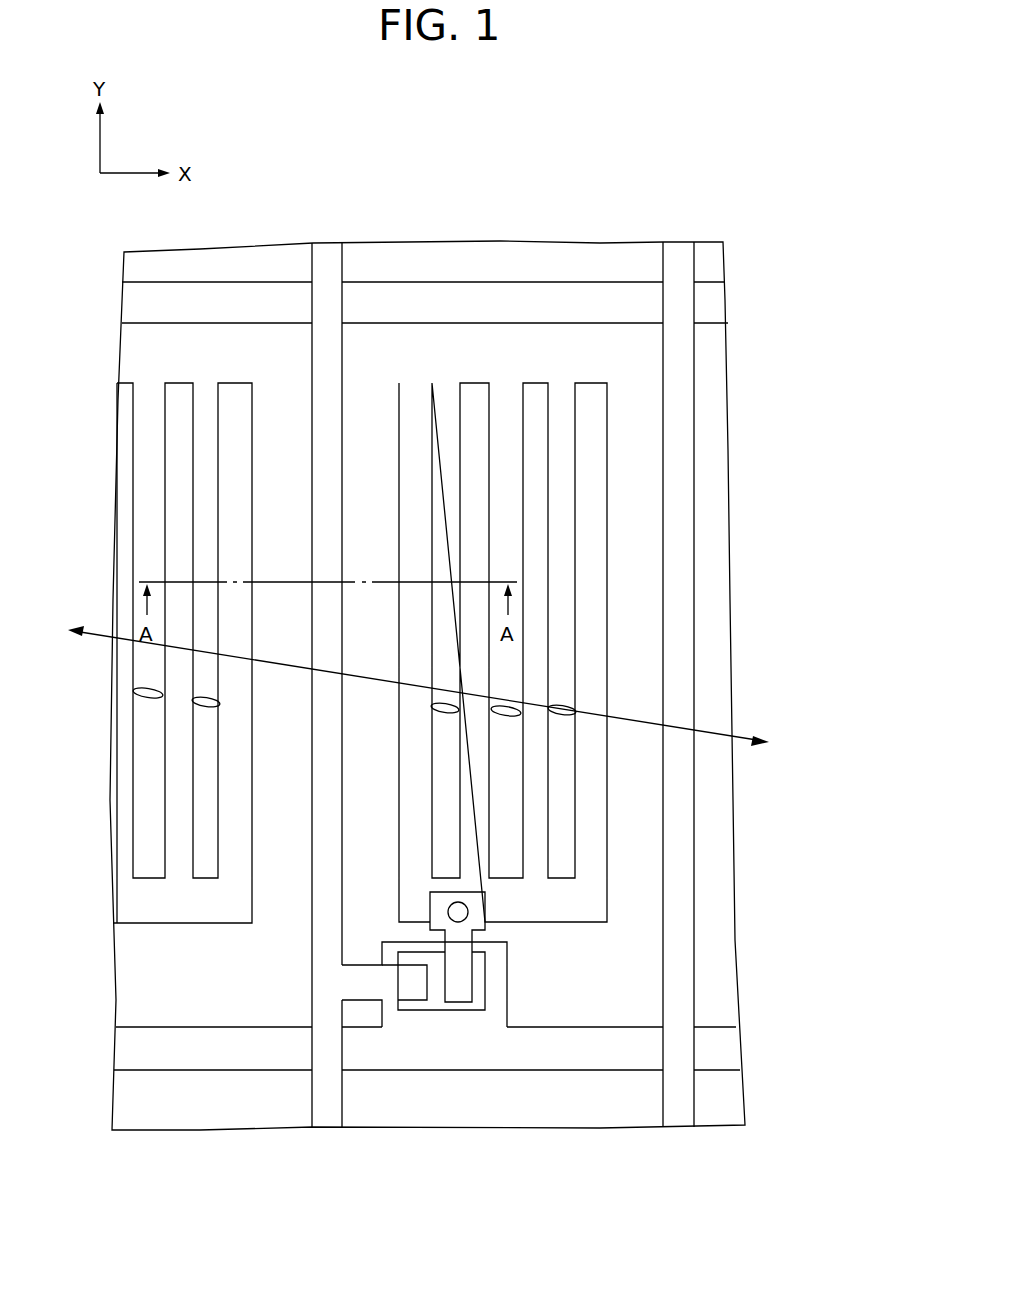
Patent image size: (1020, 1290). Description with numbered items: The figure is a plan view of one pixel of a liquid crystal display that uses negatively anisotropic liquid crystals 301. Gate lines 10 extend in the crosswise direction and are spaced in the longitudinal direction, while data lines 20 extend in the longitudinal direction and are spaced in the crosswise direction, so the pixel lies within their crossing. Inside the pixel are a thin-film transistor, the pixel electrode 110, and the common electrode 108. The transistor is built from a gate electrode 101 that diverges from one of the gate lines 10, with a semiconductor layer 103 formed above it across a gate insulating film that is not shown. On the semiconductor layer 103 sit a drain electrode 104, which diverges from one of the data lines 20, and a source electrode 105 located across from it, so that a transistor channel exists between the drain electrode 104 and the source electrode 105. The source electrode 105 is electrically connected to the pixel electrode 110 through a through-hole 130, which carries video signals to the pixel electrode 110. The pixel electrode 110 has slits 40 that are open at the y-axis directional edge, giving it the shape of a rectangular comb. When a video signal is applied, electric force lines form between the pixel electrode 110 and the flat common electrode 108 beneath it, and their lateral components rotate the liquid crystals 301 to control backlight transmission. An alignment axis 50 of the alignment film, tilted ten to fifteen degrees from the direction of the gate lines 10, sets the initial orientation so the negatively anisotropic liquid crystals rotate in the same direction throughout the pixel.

The gate line 10 is at (602, 1057).
The data line 20 is at (676, 966).
The slit 40 is at (563, 625).
The alignment axis 50 is at (647, 722).
The gate electrode 101 is at (493, 990).
The semiconductor layer 103 is at (435, 1000).
The drain electrode 104 is at (417, 987).
The source electrode 105 is at (458, 973).
The common electrode 108 is at (643, 857).
The pixel electrode 110 is at (590, 903).
The through-hole 130 is at (448, 912).
The liquid crystals 301 is at (563, 705).